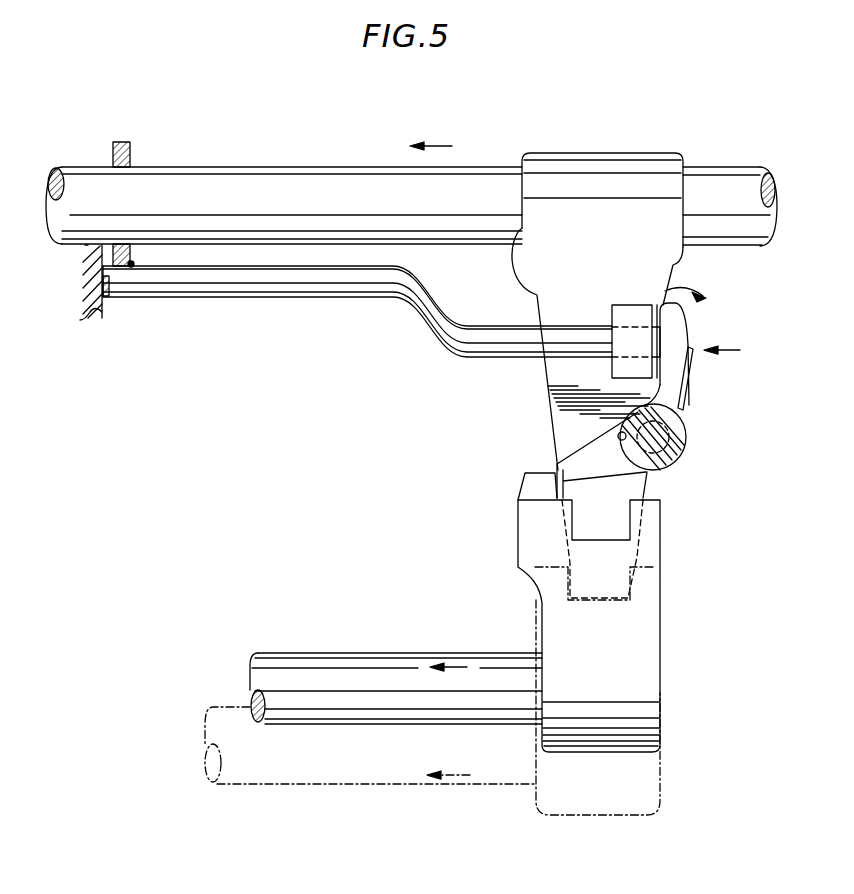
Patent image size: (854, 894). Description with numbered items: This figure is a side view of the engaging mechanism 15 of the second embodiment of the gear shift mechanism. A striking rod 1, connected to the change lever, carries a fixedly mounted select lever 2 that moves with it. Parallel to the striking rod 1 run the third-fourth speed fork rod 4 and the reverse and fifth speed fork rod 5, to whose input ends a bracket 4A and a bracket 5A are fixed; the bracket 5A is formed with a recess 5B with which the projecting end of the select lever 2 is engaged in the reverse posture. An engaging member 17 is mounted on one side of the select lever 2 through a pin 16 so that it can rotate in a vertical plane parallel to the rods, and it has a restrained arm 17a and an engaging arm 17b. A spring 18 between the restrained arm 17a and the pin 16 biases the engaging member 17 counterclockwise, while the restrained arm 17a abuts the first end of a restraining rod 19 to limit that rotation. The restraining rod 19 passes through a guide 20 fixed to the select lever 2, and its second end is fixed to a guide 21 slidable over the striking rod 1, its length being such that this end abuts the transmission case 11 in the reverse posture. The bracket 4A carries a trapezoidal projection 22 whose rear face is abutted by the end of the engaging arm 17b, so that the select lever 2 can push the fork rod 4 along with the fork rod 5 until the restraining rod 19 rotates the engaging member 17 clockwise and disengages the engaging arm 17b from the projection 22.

The striking rod 1 is at (483, 178).
The select lever 2 is at (550, 404).
The third-fourth speed fork rod 4 is at (372, 654).
The bracket 4A is at (662, 541).
The reverse and fifth speed fork rod 5 is at (418, 786).
The bracket 5A is at (663, 698).
The recess 5B is at (627, 601).
The transmission case 11 is at (104, 314).
The engaging mechanism 15 is at (737, 347).
The pin 16 is at (687, 441).
The engaging member 17 is at (635, 400).
The restrained arm 17a is at (681, 330).
The engaging arm 17b is at (578, 453).
The spring 18 is at (692, 353).
The restraining rod 19 is at (472, 355).
The guide 20 is at (625, 305).
The guide 21 is at (132, 150).
The projection 22 is at (522, 484).